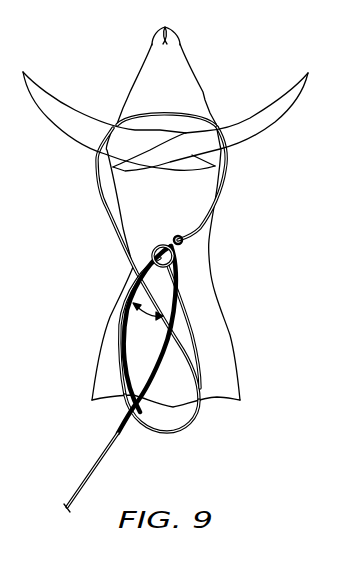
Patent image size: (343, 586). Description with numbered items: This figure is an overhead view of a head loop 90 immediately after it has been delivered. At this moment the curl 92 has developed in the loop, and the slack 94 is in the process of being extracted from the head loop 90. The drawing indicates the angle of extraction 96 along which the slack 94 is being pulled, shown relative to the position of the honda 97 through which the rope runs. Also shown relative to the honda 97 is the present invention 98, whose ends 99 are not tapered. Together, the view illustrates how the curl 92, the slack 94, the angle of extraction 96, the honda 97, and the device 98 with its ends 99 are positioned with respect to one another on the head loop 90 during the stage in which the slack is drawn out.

The head loop 90 is at (63, 229).
The curl 92 is at (192, 413).
The slack 94 is at (197, 347).
The angle of extraction 96 is at (150, 313).
The honda 97 is at (176, 238).
The present invention 98 is at (174, 290).
The ends 99 is at (121, 319).